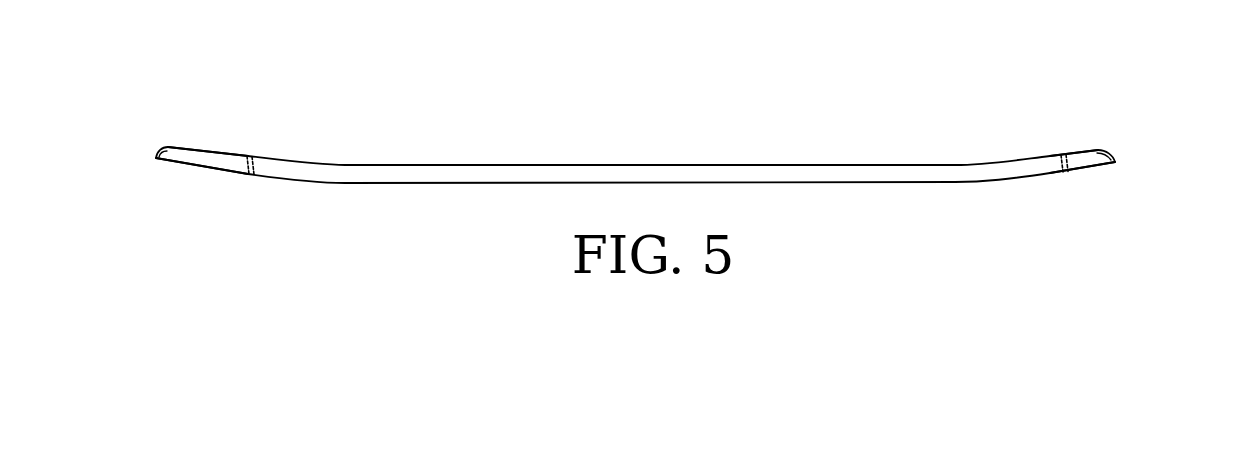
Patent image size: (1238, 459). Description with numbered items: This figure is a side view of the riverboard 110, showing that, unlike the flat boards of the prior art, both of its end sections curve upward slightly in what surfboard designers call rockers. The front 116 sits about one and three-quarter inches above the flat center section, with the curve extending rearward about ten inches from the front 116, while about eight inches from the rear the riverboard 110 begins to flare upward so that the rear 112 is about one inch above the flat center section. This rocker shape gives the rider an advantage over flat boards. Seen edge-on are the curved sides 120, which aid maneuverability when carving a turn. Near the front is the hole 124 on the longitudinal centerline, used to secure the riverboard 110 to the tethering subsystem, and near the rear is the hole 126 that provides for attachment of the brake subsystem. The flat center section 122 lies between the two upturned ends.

The riverboard 110 is at (663, 140).
The rear 112 is at (1116, 159).
The front 116 is at (178, 146).
The curved sides 120 is at (166, 147).
The intermediate body portion 122 is at (432, 175).
The hole 124 is at (250, 157).
The hole 126 is at (1065, 152).